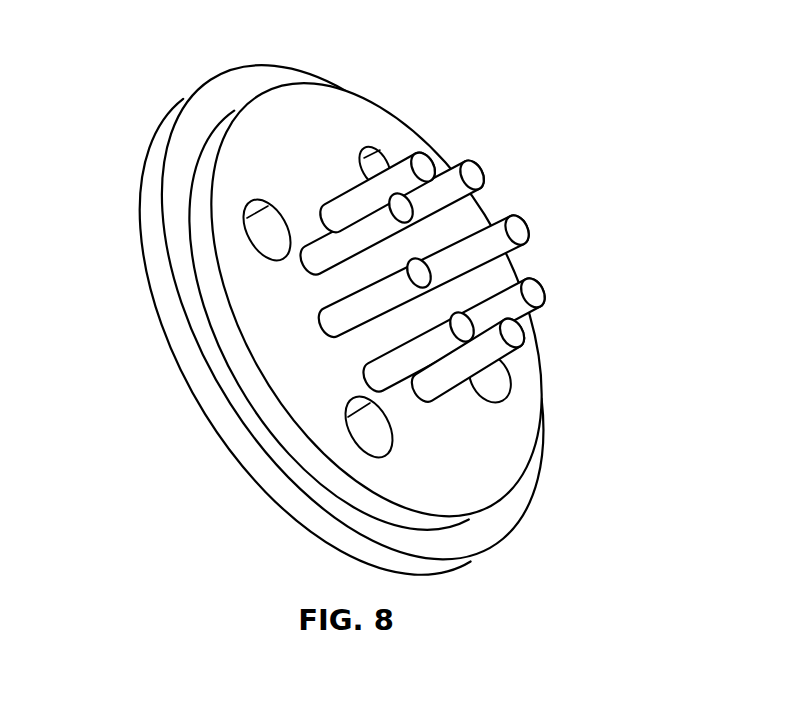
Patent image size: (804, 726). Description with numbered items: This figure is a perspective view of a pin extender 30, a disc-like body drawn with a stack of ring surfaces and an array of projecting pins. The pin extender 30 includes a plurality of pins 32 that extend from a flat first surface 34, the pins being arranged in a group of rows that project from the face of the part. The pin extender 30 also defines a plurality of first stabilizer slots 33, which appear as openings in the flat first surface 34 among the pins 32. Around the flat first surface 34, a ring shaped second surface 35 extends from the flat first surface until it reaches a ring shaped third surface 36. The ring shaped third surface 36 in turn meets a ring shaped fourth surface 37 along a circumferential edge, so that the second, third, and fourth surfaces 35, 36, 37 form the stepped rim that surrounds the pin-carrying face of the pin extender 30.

The pin extender 30 is at (586, 50).
The pins 32 is at (474, 176).
The first stabilizer slots 33 is at (375, 167).
The flat first surface 34 is at (323, 105).
The ring shaped second surface 35 is at (218, 305).
The ring shaped third surface 36 is at (233, 98).
The ring shaped fourth surface 37 is at (155, 215).